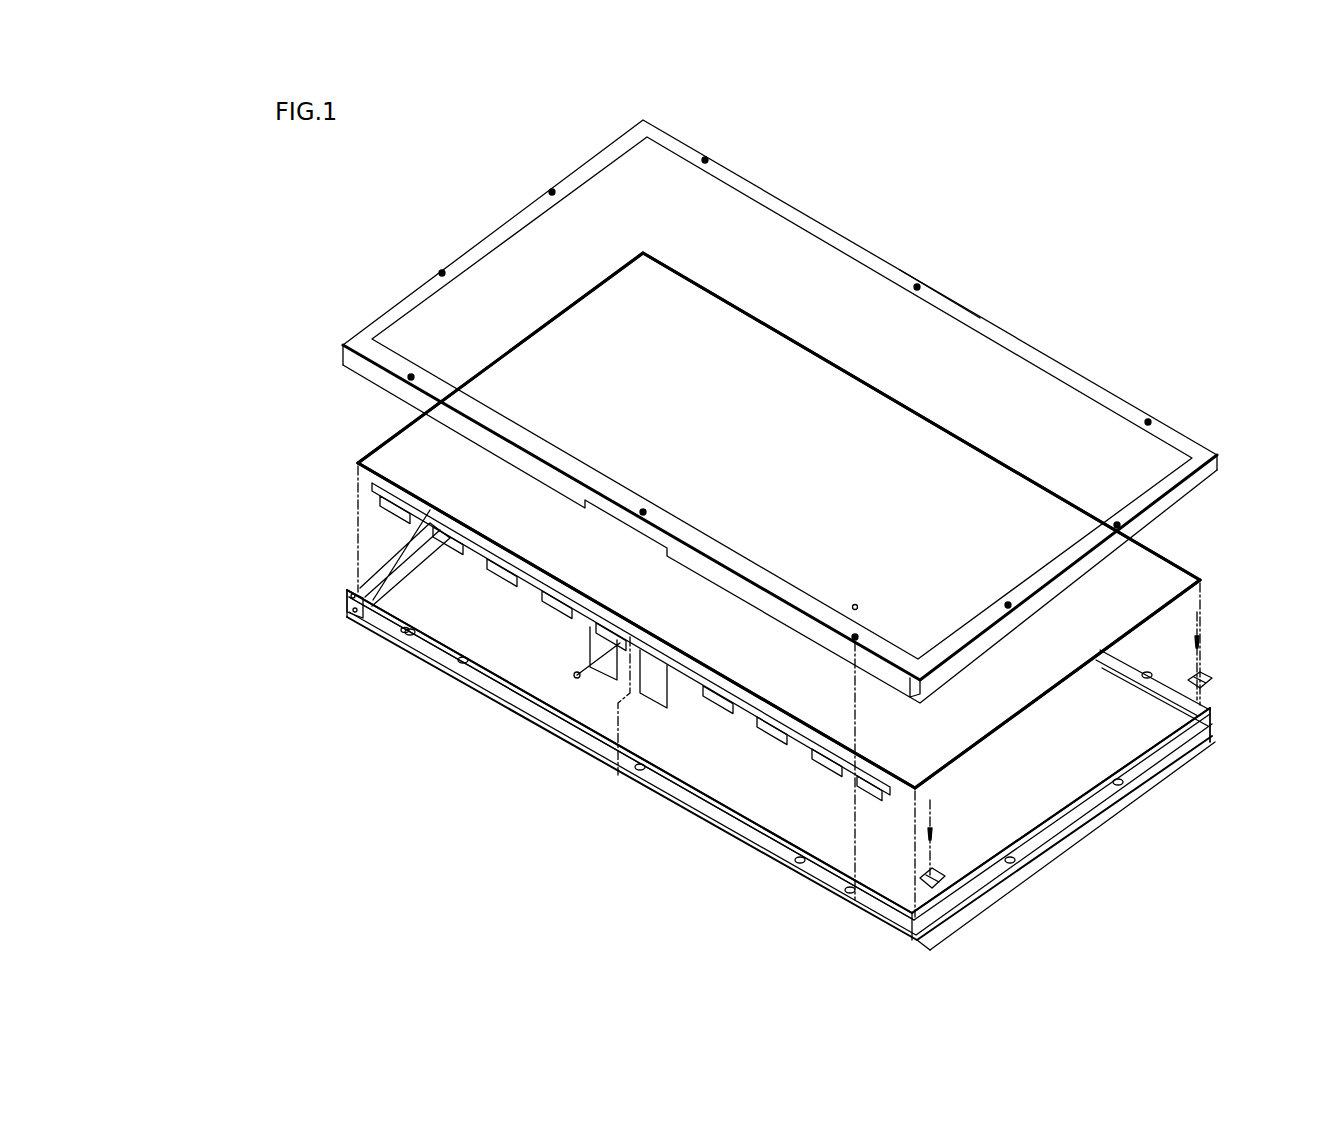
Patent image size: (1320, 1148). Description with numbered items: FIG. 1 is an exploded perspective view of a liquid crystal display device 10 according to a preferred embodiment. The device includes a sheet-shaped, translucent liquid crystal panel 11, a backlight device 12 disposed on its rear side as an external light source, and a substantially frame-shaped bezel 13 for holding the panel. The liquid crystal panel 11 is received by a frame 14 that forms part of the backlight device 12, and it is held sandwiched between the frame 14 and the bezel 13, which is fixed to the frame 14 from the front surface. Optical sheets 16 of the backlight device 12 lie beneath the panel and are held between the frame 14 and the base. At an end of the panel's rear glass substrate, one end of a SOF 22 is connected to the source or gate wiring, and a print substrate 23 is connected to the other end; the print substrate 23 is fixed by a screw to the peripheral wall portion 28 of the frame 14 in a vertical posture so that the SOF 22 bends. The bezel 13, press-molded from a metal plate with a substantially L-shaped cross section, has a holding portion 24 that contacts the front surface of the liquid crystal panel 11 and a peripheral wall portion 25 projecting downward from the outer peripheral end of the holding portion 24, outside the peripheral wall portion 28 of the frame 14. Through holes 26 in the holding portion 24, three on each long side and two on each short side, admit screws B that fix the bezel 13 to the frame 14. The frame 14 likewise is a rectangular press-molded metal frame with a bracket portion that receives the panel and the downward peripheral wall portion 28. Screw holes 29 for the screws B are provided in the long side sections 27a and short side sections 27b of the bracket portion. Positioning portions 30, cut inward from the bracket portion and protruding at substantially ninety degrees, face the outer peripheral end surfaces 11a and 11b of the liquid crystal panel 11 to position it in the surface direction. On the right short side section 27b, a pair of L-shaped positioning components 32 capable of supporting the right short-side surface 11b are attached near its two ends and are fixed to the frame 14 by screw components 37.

The liquid crystal display device 10 is at (1132, 294).
The liquid crystal panel 11 is at (813, 575).
The outer peripheral end surface 11a is at (780, 333).
The outer peripheral end surface 11b is at (540, 323).
The backlight device 12 is at (1224, 800).
The bezel 13 is at (733, 168).
The frame 14 is at (781, 734).
The optical sheets 16 is at (550, 657).
The SOF 22 is at (367, 598).
The print substrate 23 is at (515, 577).
The holding portion 24 is at (945, 305).
The peripheral wall portion 25 is at (1193, 490).
The through holes 26 is at (1118, 523).
The long side sections 27a is at (680, 788).
The short side sections 27b is at (1080, 807).
The peripheral wall portion 28 is at (687, 803).
The screw holes 29 is at (403, 632).
The positioning portions 30 is at (357, 587).
The positioning components 32 is at (1207, 683).
The screw components 37 is at (1199, 640).
The screws B is at (855, 605).